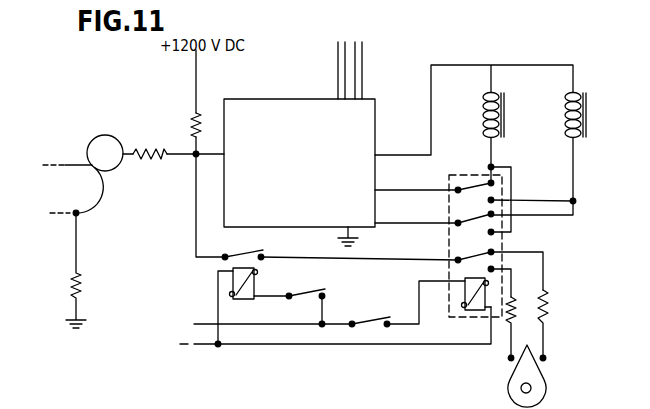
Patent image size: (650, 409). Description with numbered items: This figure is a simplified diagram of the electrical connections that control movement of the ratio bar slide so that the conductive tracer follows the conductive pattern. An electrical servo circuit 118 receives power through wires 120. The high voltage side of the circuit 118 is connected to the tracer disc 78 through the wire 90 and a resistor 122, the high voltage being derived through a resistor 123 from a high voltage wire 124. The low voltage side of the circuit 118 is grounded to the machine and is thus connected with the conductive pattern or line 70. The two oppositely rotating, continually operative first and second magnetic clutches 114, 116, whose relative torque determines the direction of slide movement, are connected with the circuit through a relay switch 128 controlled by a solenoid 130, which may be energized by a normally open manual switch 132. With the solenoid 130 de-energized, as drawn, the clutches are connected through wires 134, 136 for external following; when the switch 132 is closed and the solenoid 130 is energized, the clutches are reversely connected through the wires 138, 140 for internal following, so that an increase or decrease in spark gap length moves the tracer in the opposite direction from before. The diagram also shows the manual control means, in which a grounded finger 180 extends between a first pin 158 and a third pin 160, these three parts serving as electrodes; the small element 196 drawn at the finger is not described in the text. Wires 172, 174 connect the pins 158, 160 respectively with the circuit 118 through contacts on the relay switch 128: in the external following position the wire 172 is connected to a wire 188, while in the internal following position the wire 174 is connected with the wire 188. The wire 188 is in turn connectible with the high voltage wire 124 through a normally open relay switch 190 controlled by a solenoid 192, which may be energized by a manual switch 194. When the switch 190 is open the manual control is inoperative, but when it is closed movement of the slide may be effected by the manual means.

The conductive pattern or line 70 is at (70, 164).
The tracer disc 78 is at (110, 137).
The wire 90 is at (133, 152).
The resistor 122 is at (163, 150).
The wire 124 is at (196, 95).
The resistor 123 is at (198, 112).
The electrical servo circuit 118 is at (265, 98).
The wires 120 is at (342, 83).
The first magnetic clutch 114 is at (483, 108).
The second magnetic clutch 116 is at (565, 110).
The wire 138 is at (513, 180).
The wire 134 is at (407, 182).
The wire 136 is at (415, 216).
The wire 140 is at (545, 192).
The relay switch 128 is at (502, 239).
The relay switch 190 is at (229, 253).
The wire 188 is at (388, 257).
The wire 172 is at (543, 290).
The wire 174 is at (514, 297).
The pin 160 is at (509, 359).
The pin 158 is at (546, 357).
The finger 180 is at (508, 380).
The lamp filament 196 is at (531, 388).
The solenoid 192 is at (242, 299).
The manual switch 194 is at (295, 290).
The manual switch 132 is at (362, 319).
The solenoid 130 is at (465, 297).